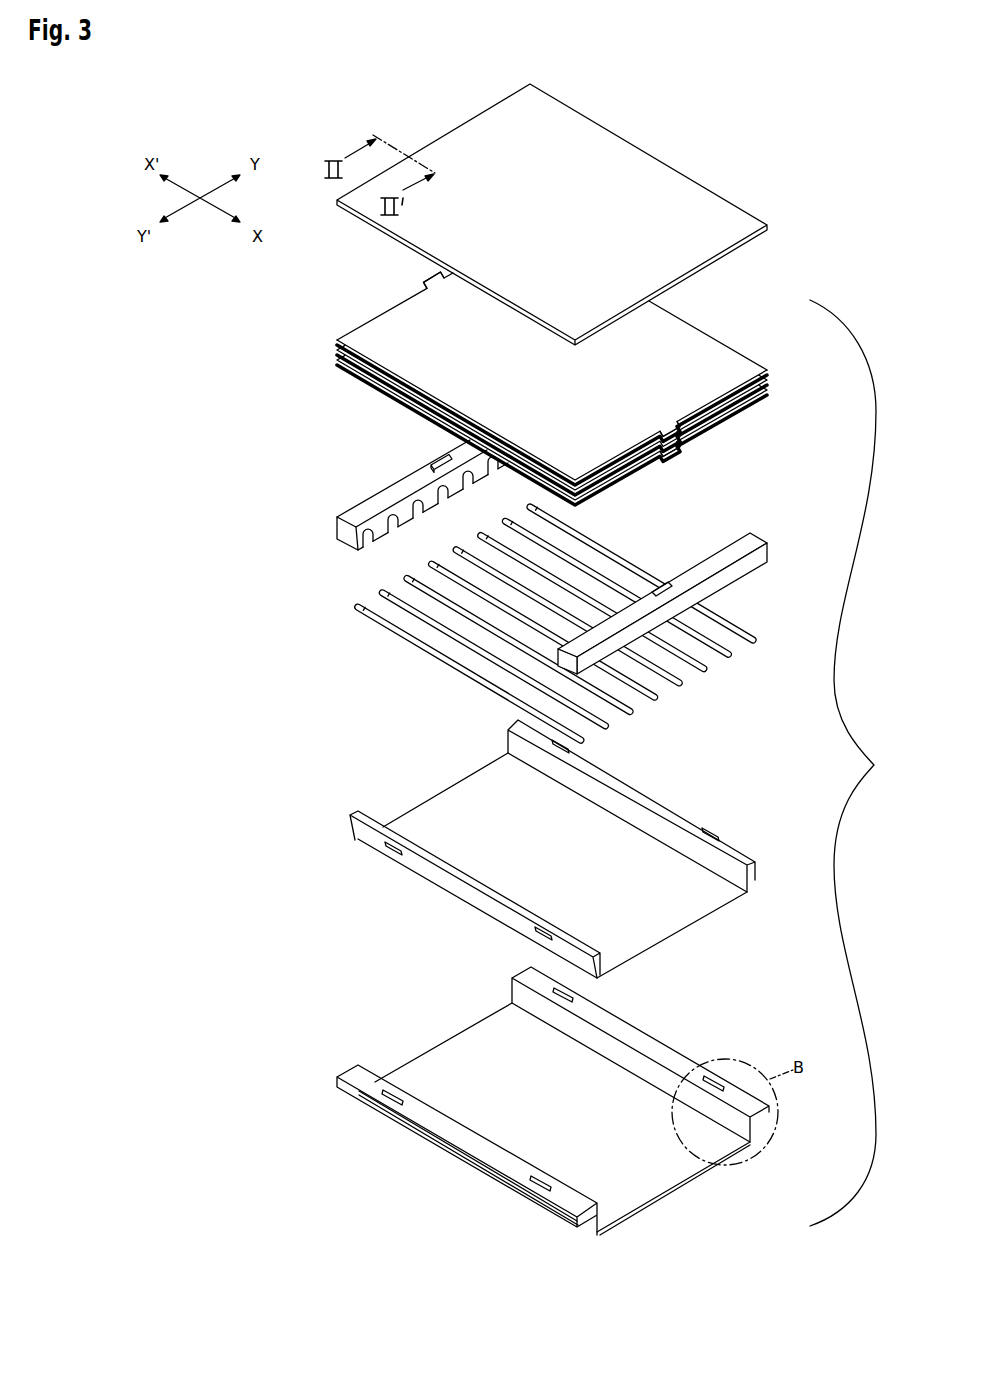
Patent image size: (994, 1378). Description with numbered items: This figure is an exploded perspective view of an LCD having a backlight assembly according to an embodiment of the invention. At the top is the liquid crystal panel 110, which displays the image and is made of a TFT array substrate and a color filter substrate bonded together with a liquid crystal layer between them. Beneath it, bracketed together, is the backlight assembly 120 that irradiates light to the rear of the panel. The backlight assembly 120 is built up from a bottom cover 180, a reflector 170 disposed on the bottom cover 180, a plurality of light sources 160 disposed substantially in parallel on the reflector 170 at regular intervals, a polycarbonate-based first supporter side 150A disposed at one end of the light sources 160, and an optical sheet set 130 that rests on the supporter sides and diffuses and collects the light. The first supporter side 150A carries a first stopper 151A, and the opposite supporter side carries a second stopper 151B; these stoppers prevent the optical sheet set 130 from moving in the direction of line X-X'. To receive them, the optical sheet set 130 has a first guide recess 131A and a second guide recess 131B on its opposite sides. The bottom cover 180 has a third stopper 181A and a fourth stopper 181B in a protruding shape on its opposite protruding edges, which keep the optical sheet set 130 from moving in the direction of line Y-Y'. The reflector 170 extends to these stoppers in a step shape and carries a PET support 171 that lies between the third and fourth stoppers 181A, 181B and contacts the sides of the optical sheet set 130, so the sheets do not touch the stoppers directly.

The liquid crystal panel 110 is at (670, 169).
The backlight assembly 120 is at (858, 763).
The optical sheet set 130 is at (772, 363).
The first guide recess 131A is at (441, 288).
The second guide recess 131B is at (668, 443).
The first supporter side 150A is at (368, 502).
The first stopper 151A is at (438, 457).
The second stopper 151B is at (744, 568).
The light sources 160 is at (755, 642).
The reflector 170 is at (702, 933).
The support 171 is at (713, 828).
The bottom cover 180 is at (697, 1200).
The third stopper 181A is at (385, 1086).
The fourth stopper 181B is at (714, 1078).